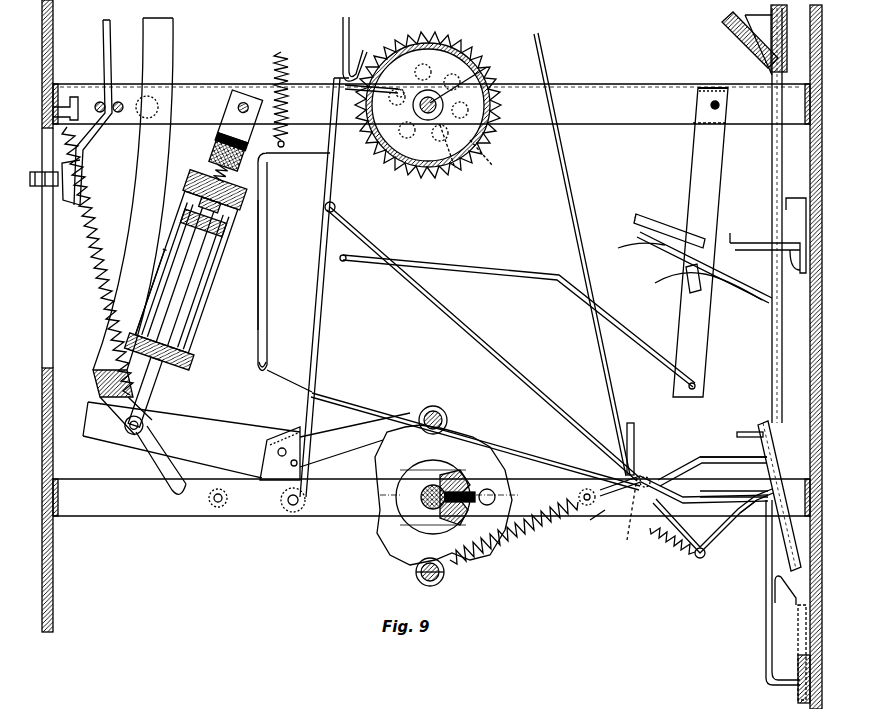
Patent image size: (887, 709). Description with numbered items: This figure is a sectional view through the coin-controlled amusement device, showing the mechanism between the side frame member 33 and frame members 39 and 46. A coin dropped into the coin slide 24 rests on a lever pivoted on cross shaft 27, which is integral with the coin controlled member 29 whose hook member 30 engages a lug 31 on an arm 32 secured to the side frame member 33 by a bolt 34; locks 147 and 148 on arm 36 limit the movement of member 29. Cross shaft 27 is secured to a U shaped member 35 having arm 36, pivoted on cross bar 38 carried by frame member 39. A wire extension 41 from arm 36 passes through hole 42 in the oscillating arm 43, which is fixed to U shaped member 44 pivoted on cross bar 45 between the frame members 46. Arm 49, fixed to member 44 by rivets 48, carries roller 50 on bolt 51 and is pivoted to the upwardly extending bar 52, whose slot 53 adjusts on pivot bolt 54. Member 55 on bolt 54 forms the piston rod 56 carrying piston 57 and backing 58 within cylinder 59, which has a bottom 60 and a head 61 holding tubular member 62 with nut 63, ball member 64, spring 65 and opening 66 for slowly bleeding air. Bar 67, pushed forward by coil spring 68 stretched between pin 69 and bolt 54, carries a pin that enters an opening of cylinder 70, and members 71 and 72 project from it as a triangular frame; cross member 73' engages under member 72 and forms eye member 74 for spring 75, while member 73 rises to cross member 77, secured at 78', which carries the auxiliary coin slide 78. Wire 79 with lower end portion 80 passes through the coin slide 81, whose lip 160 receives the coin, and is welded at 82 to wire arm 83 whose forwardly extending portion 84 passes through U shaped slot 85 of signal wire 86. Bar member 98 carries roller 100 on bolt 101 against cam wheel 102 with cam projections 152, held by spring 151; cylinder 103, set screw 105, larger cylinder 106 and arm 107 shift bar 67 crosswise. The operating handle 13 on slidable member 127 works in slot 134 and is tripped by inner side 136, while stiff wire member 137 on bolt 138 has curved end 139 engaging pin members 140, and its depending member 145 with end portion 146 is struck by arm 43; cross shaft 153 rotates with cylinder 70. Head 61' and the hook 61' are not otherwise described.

The operating handle 13 is at (55, 190).
The coin slide 24 is at (772, 160).
The cross shaft 27 is at (662, 276).
The coin controlled member 29 is at (655, 243).
The hook member 30 is at (754, 282).
The lug 31 is at (732, 238).
The arm 32 is at (752, 233).
The side frame member 33 is at (810, 215).
The bolt 34 is at (795, 262).
The U shaped member 35 is at (695, 90).
The arm 36 is at (698, 160).
The cross bar 38 is at (712, 107).
The frame member 39 is at (602, 92).
The wire extension 41 is at (533, 278).
The hole 42 is at (356, 232).
The oscillating arm 43 is at (290, 380).
The U shaped member 44 is at (270, 433).
The cross bar 45 is at (292, 512).
The frame member 46 is at (107, 512).
The rivets 48 is at (215, 510).
The arm 49 is at (191, 436).
The roller 50 is at (437, 408).
The bolt 51 is at (447, 420).
The upwardly extending bar 52 is at (107, 348).
The slot 53 is at (157, 460).
The pivot bolt 54 is at (133, 430).
The member 55 is at (165, 400).
The piston rod 56 is at (193, 320).
The piston 57 is at (214, 250).
The backing 58 is at (212, 240).
The cylinder 59 is at (185, 210).
The bottom 60 is at (195, 353).
The head 61 is at (208, 177).
The hook 61' is at (336, 49).
The tubular member 62 is at (224, 165).
The nut 63 is at (240, 197).
The ball member 64 is at (235, 142).
The spring 65 is at (222, 133).
The opening 66 is at (233, 93).
The bar 67 is at (321, 236).
The coil spring 68 is at (102, 232).
The pin 69 is at (64, 104).
The cylinder 70 is at (458, 66).
The member 71 is at (427, 297).
The member 72 is at (337, 397).
The member 73 is at (684, 469).
The cross member 73' is at (582, 532).
The eye member 74 is at (697, 556).
The spring 75 is at (653, 540).
The cross member 77 is at (765, 493).
The auxiliary coin slide 78 is at (727, 496).
The securing point 78' is at (749, 521).
The wire 79 is at (768, 640).
The lower end portion 80 is at (800, 700).
The coin slide 81 is at (800, 615).
The weld 82 is at (725, 462).
The wire arm 83 is at (683, 473).
The forwardly extending portion 84 is at (628, 532).
The U shaped slot 85 is at (634, 448).
The signal wire 86 is at (571, 201).
The bar member 98 is at (428, 498).
The roller 100 is at (447, 575).
The bolt 101 is at (420, 565).
The cam wheel 102 is at (430, 500).
The cylinder 103 is at (480, 500).
The set screw 105 is at (498, 478).
The larger cylinder 106 is at (445, 492).
The arm 107 is at (425, 500).
The slidable member 127 is at (110, 20).
The slot 134 is at (52, 307).
The inner side 136 is at (100, 106).
The stiff wire member 137 is at (310, 152).
The bolt 138 is at (140, 100).
The curved end 139 is at (458, 170).
The rigid pin members 140 is at (482, 167).
The depending member 145 is at (264, 306).
The end portion 146 is at (263, 362).
The lock 147 is at (700, 227).
The lock 148 is at (688, 276).
The spring 151 is at (517, 540).
The cam projections 152 is at (480, 440).
The cross shaft 153 is at (487, 70).
The lip 160 is at (775, 580).